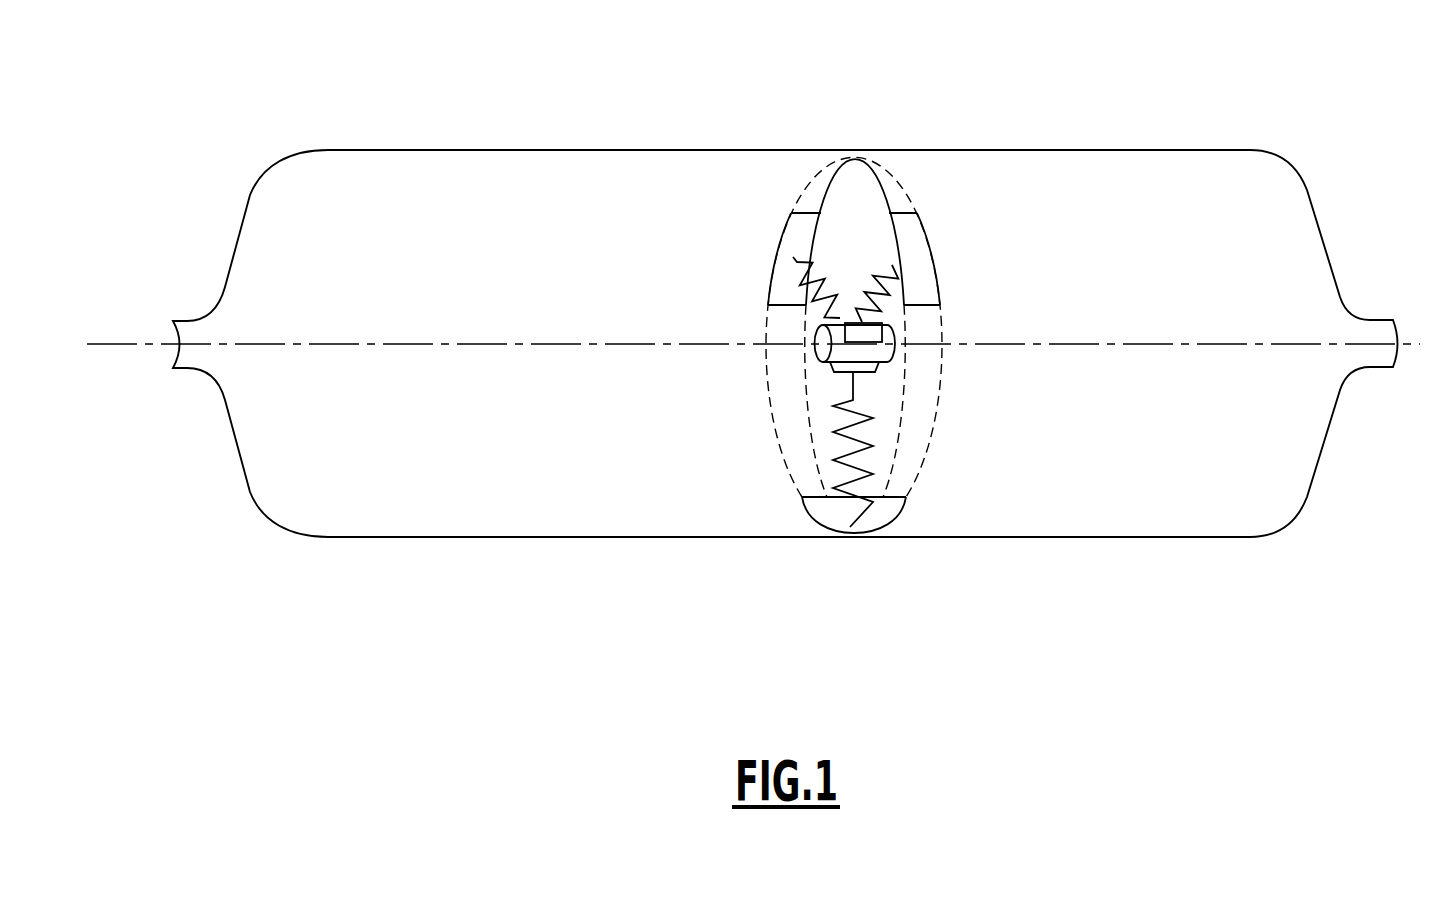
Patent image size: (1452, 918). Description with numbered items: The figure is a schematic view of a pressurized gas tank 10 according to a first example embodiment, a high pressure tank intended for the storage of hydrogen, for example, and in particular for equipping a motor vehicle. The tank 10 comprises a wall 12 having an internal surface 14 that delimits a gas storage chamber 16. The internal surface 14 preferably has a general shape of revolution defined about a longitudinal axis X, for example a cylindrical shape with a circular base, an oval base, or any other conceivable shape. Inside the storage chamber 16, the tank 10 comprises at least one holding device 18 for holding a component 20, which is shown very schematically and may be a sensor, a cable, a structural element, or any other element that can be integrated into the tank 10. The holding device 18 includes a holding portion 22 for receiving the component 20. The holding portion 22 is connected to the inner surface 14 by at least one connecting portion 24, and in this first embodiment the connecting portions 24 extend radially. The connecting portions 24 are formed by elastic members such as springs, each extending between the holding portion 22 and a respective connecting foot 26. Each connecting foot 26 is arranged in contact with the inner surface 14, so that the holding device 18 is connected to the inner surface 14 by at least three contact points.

The pressurized gas tank 10 is at (358, 84).
The wall 12 is at (610, 150).
The internal surface 14 is at (535, 155).
The gas storage chamber 16 is at (1103, 234).
The holding device 18 is at (884, 152).
The component 20 is at (885, 352).
The holding portion 22 is at (825, 368).
The connecting portion 24 is at (797, 275).
The connecting foot 26 is at (915, 253).
The longitudinal axis X is at (105, 344).